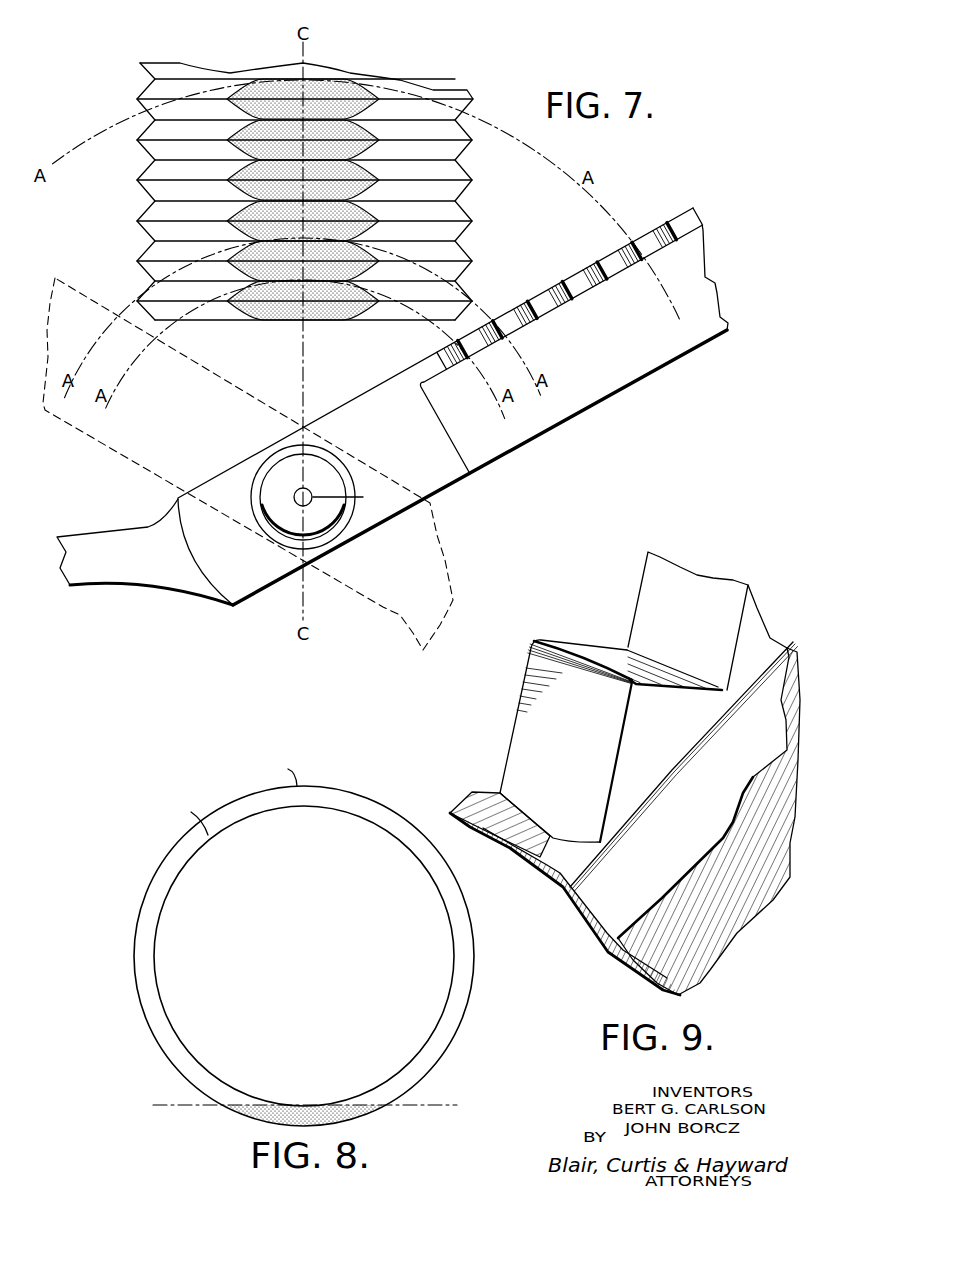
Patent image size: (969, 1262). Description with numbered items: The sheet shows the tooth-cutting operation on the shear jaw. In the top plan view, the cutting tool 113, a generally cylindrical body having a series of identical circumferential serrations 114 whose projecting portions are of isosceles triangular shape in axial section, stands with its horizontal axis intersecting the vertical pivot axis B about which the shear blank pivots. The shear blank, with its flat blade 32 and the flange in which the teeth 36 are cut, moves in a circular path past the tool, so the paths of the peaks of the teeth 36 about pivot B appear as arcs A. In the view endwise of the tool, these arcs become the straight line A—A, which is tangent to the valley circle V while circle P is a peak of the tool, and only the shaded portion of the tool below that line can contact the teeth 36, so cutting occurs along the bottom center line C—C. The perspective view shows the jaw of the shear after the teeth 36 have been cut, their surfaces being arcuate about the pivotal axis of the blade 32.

In FIG. 7, the flat blade 32 is at (560, 424).
In FIG. 9, the flat blade 32 is at (603, 912).
In FIG. 7, the teeth 36 is at (497, 315).
In FIG. 9, the teeth 36 is at (639, 601).
In FIG. 7, the cutting tool 113 is at (131, 87).
In FIG. 8, the cutting tool 113 is at (133, 914).
In FIG. 7, the circumferential serrations 114 is at (150, 182).